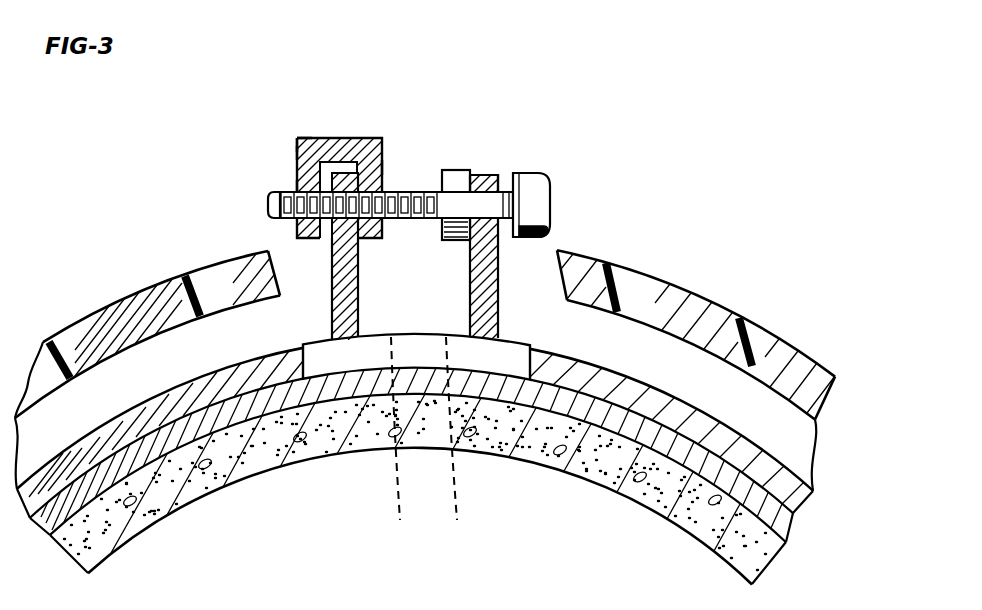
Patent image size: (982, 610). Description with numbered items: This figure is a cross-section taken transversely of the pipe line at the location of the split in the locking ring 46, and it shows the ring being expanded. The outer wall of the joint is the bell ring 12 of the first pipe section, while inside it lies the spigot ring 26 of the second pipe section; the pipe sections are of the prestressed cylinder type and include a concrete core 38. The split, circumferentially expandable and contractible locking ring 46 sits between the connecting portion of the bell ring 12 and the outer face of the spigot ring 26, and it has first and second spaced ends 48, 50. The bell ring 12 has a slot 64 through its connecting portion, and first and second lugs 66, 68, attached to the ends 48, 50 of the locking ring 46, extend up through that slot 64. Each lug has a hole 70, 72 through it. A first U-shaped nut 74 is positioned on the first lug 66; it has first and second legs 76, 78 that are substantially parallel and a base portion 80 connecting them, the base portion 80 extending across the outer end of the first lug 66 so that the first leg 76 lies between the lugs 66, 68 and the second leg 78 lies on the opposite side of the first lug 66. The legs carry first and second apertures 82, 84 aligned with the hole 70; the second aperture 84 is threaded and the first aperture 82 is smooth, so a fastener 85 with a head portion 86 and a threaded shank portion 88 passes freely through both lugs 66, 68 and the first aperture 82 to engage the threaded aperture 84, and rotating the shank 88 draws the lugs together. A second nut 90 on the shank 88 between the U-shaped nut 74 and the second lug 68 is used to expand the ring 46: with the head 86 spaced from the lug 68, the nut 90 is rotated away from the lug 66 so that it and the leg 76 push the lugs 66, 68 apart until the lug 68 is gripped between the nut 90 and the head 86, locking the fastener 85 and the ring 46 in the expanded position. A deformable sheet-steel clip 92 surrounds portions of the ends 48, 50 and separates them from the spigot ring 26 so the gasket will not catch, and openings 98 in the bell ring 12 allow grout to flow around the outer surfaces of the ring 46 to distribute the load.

The bell ring 12 is at (650, 512).
The spigot ring 26 is at (217, 428).
The concrete core 38 is at (583, 480).
The locking ring 46 is at (163, 520).
The first spaced end 48 is at (407, 446).
The second spaced end 50 is at (468, 442).
The slot 64 is at (655, 292).
The first lug 66 is at (265, 251).
The second lug 68 is at (498, 312).
The hole 70 is at (337, 177).
The hole 72 is at (484, 174).
The first U-shaped nut 74 is at (298, 137).
The first leg 76 is at (383, 168).
The second leg 78 is at (297, 153).
The base portion 80 is at (320, 138).
The first aperture 82 is at (383, 158).
The second aperture 84 is at (297, 187).
The fastener 85 is at (574, 216).
The head portion 86 is at (525, 173).
The threaded shank portion 88 is at (268, 205).
The second nut 90 is at (455, 170).
The clip 92 is at (318, 380).
The openings 98 is at (762, 345).